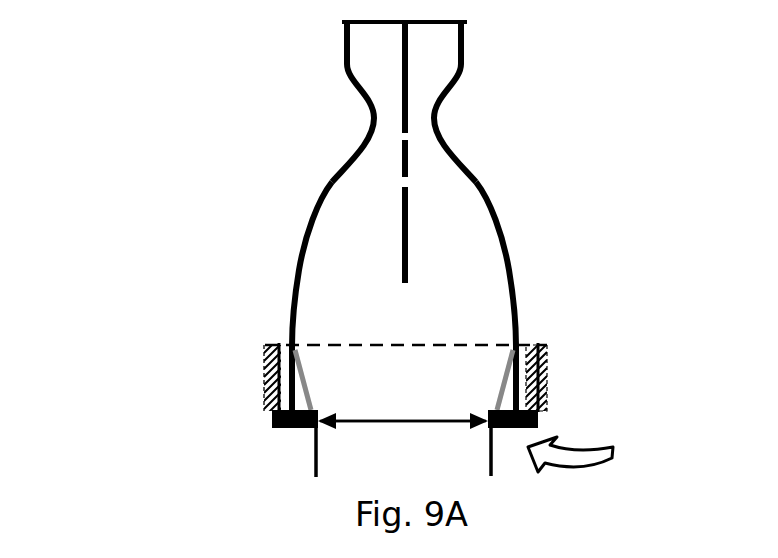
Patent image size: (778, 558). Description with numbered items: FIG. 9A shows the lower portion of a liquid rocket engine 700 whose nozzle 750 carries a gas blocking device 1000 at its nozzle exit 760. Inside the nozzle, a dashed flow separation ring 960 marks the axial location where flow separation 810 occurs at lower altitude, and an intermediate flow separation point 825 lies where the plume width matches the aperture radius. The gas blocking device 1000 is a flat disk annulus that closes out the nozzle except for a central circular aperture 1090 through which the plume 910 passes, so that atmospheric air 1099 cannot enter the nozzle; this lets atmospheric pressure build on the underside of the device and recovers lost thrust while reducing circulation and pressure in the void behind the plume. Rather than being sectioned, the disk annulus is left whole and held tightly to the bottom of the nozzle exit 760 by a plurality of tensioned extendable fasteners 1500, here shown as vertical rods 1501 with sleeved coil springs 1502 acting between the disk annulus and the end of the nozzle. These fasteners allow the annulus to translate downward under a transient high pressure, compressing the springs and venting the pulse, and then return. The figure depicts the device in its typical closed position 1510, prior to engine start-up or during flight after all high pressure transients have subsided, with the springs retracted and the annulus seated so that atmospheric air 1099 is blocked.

The liquid rocket engine 700 is at (343, 31).
The nozzle 750 is at (333, 176).
The flow separation point 810 is at (504, 252).
The flow separation ring 960 is at (462, 343).
The flow separation point 825 is at (522, 341).
The vertical rods 1501 is at (276, 348).
The sleeved coil springs 1502 is at (266, 352).
The tensioned extendable fasteners 1500 is at (551, 345).
The gas blocking device 1000 is at (273, 413).
The nozzle exit 760 is at (300, 431).
The plume 910 is at (403, 396).
The central circular aperture 1090 is at (418, 424).
The atmospheric air 1099 is at (588, 445).
The typical position 1510 is at (113, 18).